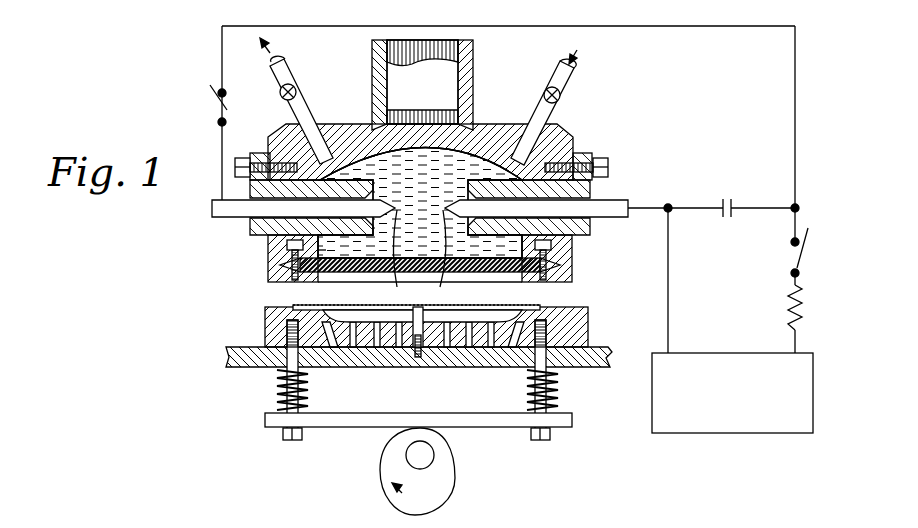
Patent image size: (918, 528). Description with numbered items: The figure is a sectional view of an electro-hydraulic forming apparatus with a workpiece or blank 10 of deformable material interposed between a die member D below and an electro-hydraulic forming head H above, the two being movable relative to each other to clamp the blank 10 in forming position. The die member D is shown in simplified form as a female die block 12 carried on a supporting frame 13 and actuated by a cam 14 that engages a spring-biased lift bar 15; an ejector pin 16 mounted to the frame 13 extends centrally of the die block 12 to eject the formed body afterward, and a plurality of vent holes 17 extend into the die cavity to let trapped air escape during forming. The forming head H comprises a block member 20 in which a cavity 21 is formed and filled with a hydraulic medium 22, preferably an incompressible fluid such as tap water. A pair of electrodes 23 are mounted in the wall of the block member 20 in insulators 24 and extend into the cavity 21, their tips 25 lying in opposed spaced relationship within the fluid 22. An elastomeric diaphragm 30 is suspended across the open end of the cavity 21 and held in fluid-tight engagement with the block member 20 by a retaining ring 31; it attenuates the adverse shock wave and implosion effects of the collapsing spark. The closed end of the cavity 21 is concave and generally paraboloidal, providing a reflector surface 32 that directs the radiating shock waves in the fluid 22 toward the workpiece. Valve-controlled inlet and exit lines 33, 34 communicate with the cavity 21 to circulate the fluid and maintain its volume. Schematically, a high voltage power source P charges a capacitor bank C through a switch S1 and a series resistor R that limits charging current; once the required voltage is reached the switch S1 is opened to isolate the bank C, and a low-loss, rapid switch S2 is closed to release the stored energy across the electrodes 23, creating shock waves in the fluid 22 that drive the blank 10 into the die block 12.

The workpiece or blank 10 is at (538, 308).
The female die block 12 is at (272, 310).
The supporting frame 13 is at (250, 323).
The cam 14 is at (453, 480).
The spring-biased lift bar 15 is at (344, 420).
The ejector pin 16 is at (417, 365).
The vent holes 17 is at (330, 345).
The block member 20 is at (568, 250).
The cavity 21 is at (323, 248).
The hydraulic medium 22 is at (390, 175).
The electrodes 23 is at (235, 218).
The insulators 24 is at (258, 160).
The electrode tips 25 is at (420, 259).
The elastomeric diaphragm 30 is at (463, 274).
The retaining ring 31 is at (576, 277).
The reflector surface 32 is at (445, 150).
The inlet line 33 is at (304, 103).
The exit line 34 is at (573, 82).
The electro-hydraulic forming head H is at (580, 127).
The capacitor bank C is at (729, 198).
The charging switch S1 is at (788, 262).
The discharge switch S2 is at (210, 102).
The resistor R is at (788, 313).
The die member D is at (272, 380).
The high voltage power source P is at (737, 428).